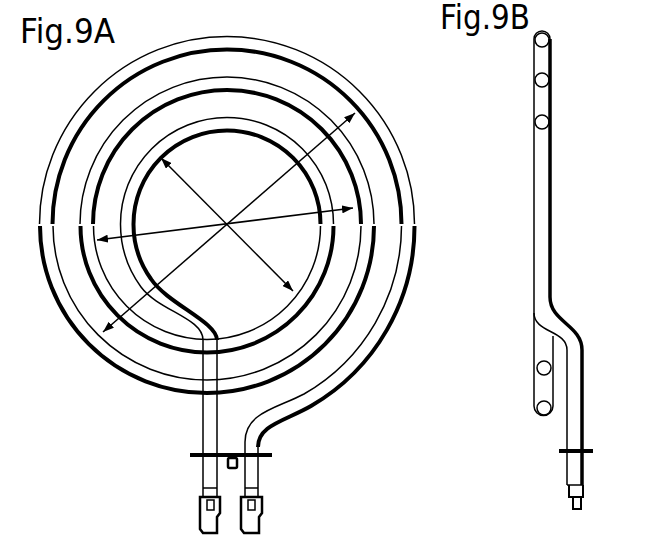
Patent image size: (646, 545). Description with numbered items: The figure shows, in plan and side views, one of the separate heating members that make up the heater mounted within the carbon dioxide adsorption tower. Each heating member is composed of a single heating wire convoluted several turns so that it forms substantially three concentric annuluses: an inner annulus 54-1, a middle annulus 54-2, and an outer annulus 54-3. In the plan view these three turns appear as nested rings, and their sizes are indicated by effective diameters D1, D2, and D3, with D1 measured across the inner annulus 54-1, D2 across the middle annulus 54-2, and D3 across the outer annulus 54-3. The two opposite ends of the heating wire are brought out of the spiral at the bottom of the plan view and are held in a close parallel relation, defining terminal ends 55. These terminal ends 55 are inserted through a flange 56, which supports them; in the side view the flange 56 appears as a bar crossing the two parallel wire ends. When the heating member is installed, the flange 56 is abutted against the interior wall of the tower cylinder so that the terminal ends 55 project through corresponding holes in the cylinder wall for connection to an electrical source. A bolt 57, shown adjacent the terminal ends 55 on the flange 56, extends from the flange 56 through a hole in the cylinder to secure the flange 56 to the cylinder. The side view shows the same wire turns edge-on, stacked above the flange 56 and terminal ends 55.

The inner annulus 54-1 is at (330, 232).
The middle annulus 54-2 is at (362, 178).
The outer annulus 54-3 is at (388, 133).
The terminal ends 55 is at (203, 468).
The flange 56 is at (190, 454).
The bolt 57 is at (237, 467).
The effective diameter of inner annulus D1 is at (227, 224).
The effective diameter of middle annulus D2 is at (225, 209).
The effective diameter of outer annulus D3 is at (229, 222).